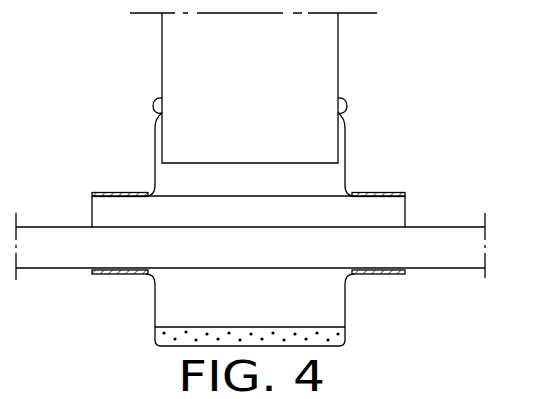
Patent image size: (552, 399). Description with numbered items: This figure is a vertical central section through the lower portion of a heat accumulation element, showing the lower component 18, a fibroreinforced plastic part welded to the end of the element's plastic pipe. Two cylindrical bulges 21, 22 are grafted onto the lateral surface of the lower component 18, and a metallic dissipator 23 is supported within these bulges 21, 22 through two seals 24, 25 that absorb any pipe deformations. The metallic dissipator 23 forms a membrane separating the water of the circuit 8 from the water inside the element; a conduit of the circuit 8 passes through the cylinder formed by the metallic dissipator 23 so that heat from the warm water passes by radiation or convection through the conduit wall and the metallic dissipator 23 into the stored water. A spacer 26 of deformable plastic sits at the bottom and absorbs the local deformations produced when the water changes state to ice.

The circuit 8 is at (62, 271).
The lower component 18 is at (346, 143).
The cylindrical bulge 21 is at (148, 278).
The cylindrical bulge 22 is at (365, 276).
The metallic dissipator 23 is at (200, 196).
The seal 24 is at (118, 192).
The seal 25 is at (385, 192).
The spacer 26 is at (158, 345).